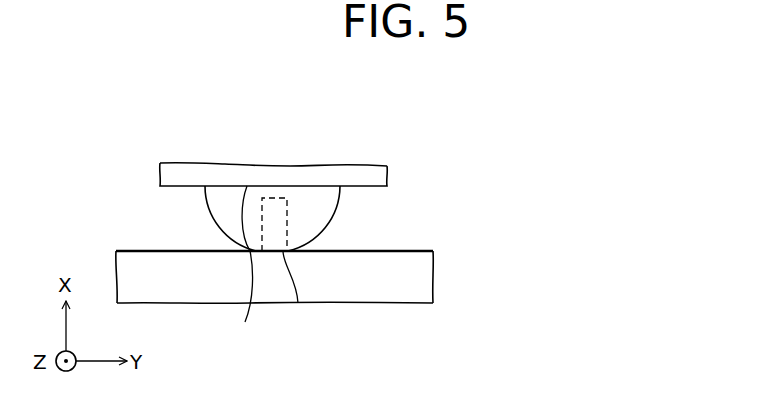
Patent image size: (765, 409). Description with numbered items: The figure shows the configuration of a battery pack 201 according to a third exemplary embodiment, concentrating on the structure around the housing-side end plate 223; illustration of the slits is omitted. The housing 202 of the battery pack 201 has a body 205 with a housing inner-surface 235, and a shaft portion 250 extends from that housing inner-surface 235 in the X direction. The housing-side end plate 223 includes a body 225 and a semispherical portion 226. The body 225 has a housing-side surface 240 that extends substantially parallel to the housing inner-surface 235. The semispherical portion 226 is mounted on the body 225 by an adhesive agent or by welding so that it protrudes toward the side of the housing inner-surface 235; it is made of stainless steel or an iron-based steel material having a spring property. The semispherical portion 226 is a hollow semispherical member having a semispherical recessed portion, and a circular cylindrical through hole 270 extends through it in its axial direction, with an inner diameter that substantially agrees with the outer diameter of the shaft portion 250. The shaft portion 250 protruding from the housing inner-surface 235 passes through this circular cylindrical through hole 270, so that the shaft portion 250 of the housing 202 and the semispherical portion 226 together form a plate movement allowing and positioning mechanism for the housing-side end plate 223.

The battery pack 201 is at (311, 136).
The housing-side end plate 223 is at (249, 161).
The body 225 is at (360, 175).
The semispherical portion 226 is at (207, 214).
The shaft portion 250 is at (287, 223).
The housing-side surface 240 is at (250, 267).
The circular cylindrical through hole 270 is at (300, 290).
The housing 202 is at (309, 295).
The housing inner-surface 235 is at (407, 251).
The body 205 is at (387, 306).